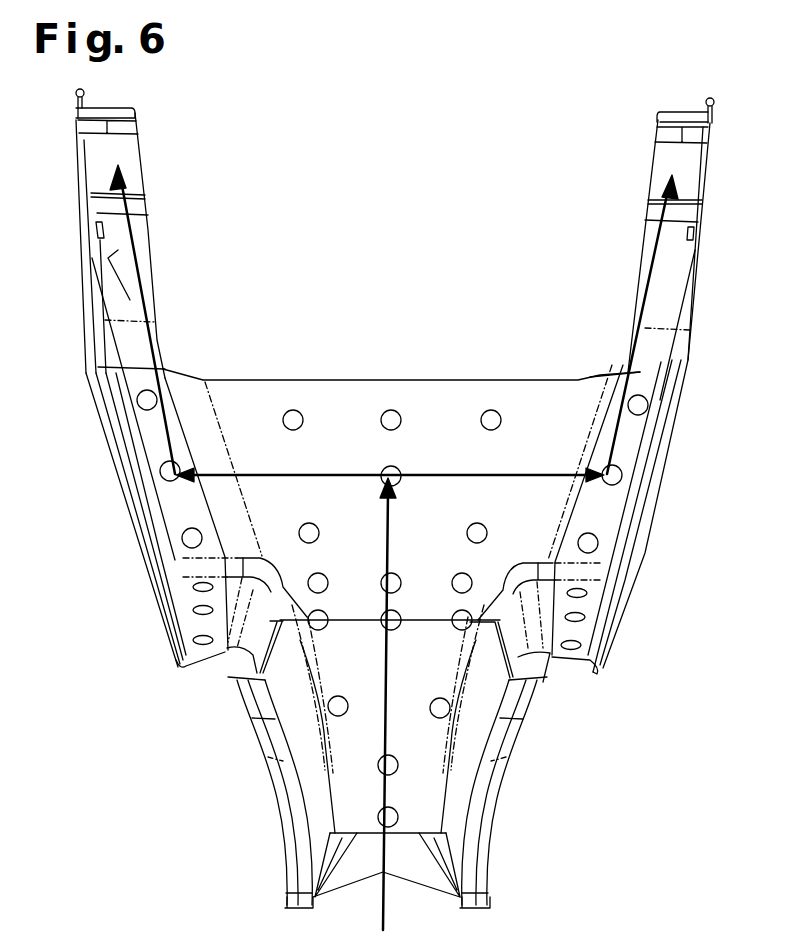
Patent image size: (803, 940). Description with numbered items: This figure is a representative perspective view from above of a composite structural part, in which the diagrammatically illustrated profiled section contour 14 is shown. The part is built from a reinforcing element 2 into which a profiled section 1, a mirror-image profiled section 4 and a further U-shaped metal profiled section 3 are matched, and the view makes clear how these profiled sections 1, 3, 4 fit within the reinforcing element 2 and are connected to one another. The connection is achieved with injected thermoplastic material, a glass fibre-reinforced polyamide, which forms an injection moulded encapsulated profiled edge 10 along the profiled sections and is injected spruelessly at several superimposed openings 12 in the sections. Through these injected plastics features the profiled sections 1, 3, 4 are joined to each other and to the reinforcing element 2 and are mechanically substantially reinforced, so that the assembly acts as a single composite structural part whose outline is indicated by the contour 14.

The profiled section 1 is at (610, 505).
The reinforcing element 2 is at (338, 418).
The profiled section 3 is at (420, 743).
The mirror-image profiled section 4 is at (118, 290).
The injection moulded encapsulated profiled edge 10 is at (596, 667).
The superimposed openings 12 is at (312, 532).
The profiled section contour 14 is at (458, 475).